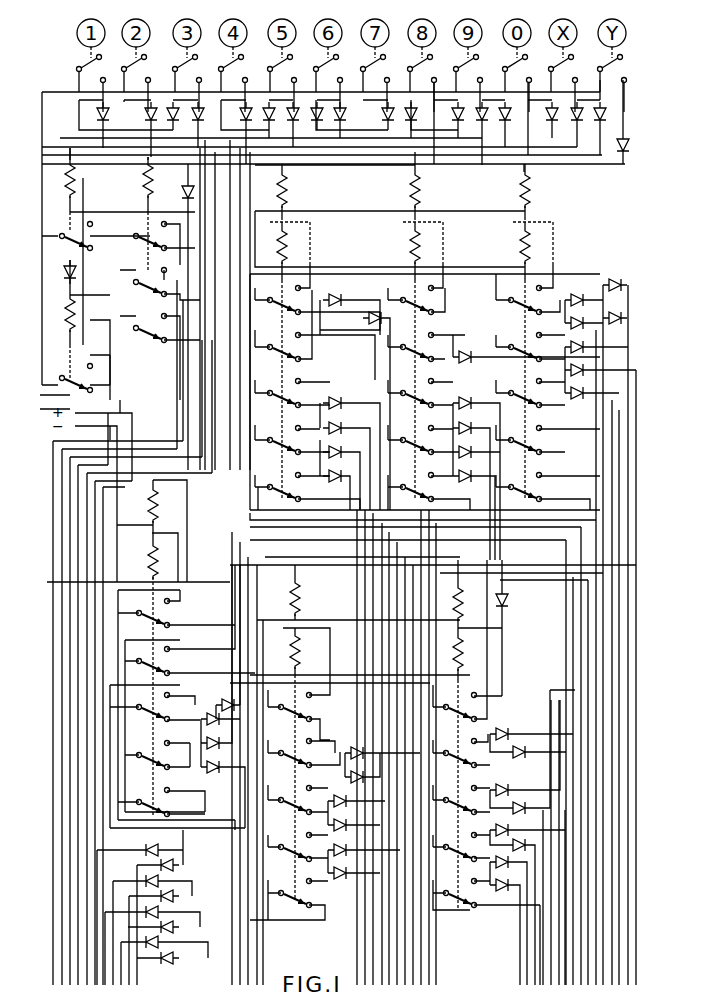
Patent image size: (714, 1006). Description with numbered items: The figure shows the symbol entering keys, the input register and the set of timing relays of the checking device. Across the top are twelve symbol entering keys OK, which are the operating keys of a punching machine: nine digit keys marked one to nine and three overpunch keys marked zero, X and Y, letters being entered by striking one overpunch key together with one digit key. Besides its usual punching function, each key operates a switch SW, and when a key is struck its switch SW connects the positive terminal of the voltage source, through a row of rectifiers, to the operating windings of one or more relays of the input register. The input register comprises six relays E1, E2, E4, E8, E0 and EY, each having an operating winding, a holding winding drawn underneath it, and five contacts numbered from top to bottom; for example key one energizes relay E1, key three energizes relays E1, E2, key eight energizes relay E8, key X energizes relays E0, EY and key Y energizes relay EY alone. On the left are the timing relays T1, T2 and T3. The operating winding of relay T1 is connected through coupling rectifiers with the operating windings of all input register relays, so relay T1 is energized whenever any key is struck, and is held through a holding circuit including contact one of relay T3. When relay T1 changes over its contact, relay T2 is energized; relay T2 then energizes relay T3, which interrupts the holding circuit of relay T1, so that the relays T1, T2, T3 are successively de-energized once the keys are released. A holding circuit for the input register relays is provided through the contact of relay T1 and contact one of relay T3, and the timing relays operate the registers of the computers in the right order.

The symbol entering keys OK is at (76, 32).
The switch SW is at (78, 56).
The timing relay T1 is at (57, 189).
The timing relay T2 is at (57, 326).
The timing relay T3 is at (135, 213).
The input register relay E8 is at (290, 332).
The input register relay E0 is at (423, 326).
The input register relay EY is at (534, 332).
The input register relay E1 is at (152, 647).
The input register relay E2 is at (298, 732).
The input register relay E4 is at (467, 735).